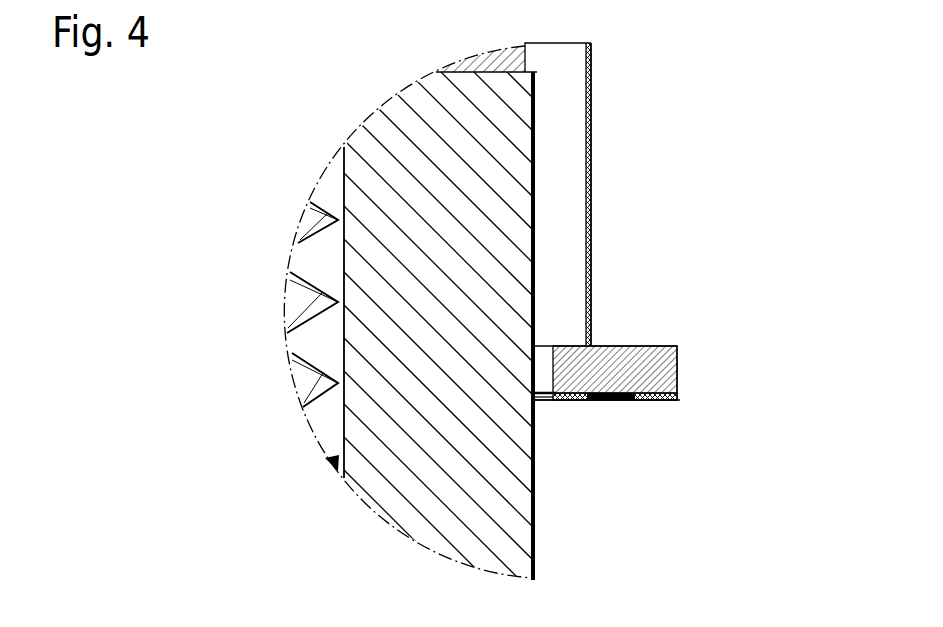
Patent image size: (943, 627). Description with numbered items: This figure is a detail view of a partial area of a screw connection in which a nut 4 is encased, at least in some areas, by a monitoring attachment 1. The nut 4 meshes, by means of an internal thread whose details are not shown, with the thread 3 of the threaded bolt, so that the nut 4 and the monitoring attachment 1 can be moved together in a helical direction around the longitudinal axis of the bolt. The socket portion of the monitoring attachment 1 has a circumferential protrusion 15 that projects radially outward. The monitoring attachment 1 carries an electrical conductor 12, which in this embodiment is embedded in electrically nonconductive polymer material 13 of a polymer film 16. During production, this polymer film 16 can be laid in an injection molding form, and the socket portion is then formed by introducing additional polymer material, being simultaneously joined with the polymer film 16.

The monitoring attachment 1 is at (615, 340).
The thread 3 is at (313, 216).
The nut 4 is at (466, 219).
The electrical conductor 12 is at (625, 400).
The electrically nonconductive polymer material 13 is at (677, 398).
The circumferential protrusion 15 is at (677, 346).
The polymer film 16 is at (567, 400).